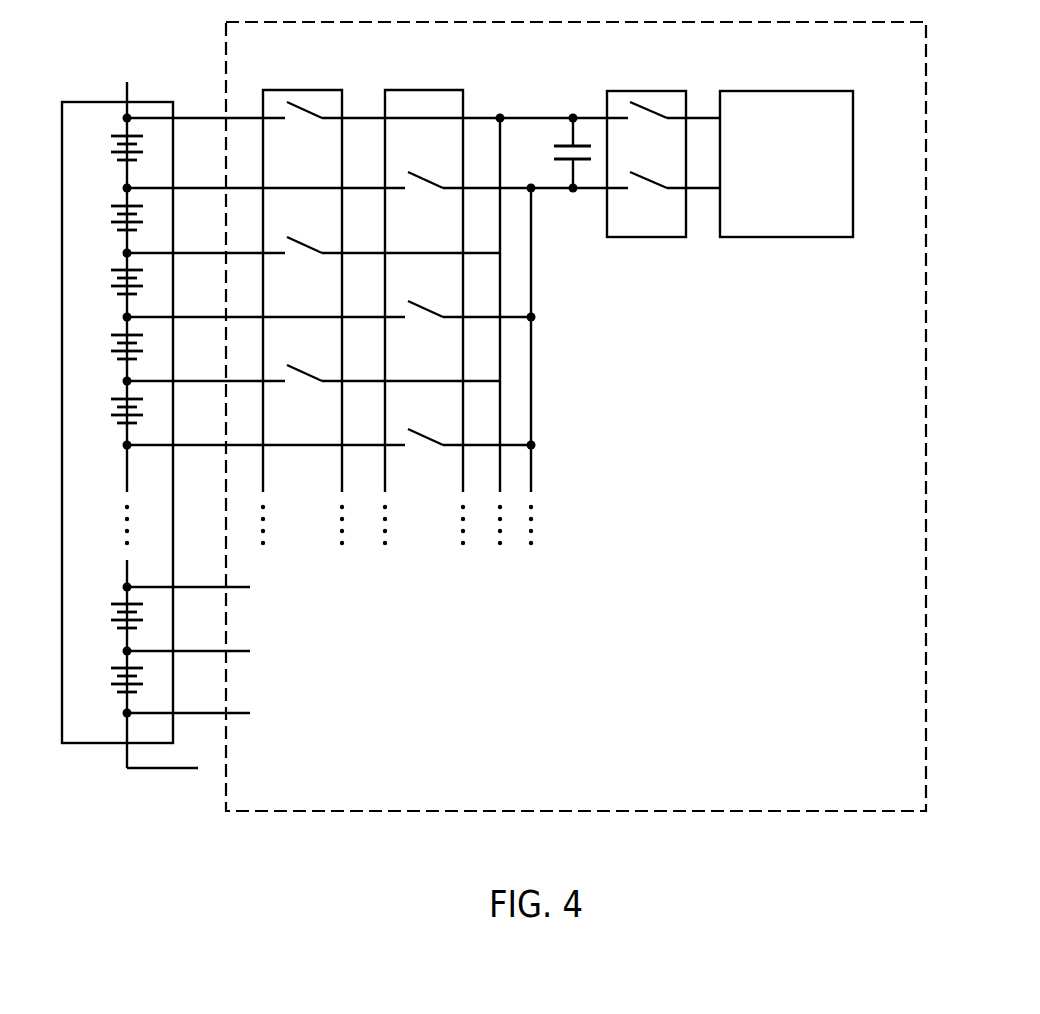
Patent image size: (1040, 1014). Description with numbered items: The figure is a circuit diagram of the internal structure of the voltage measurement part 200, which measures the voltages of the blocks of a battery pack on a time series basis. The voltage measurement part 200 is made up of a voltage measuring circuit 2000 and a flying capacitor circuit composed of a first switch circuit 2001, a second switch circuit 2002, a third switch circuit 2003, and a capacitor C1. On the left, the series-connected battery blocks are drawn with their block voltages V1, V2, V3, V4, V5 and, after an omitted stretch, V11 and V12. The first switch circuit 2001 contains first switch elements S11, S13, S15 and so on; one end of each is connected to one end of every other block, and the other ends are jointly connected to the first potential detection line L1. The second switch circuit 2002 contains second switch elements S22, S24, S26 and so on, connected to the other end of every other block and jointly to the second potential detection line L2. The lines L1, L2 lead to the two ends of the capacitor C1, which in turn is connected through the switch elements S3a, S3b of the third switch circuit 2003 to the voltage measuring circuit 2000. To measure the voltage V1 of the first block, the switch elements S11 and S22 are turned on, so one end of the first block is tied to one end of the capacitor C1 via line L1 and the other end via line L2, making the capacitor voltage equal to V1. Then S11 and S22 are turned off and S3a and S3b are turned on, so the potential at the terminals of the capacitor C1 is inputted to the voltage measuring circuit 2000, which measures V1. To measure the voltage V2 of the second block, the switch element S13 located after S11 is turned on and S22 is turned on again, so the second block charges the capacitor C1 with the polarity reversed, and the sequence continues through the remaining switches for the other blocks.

The voltage measurement part 200 is at (926, 357).
The voltage measuring circuit 2000 is at (853, 120).
The first switch circuit 2001 is at (305, 90).
The second switch circuit 2002 is at (428, 90).
The third switch circuit 2003 is at (662, 238).
The first potential detection line L1 is at (537, 117).
The second potential detection line L2 is at (558, 195).
The capacitor C1 is at (582, 140).
The first switch element S11 is at (304, 127).
The first switch element S13 is at (304, 262).
The first switch element S15 is at (304, 390).
The second switch element S22 is at (425, 197).
The second switch element S24 is at (425, 326).
The second switch element S26 is at (425, 454).
The switch element S3a is at (648, 128).
The switch element S3b is at (648, 197).
The voltage of the first block V1 is at (107, 154).
The voltage of the second block V2 is at (107, 223).
The block voltage V3 is at (107, 287).
The block voltage V4 is at (107, 352).
The block voltage V5 is at (107, 416).
The block voltage V11 is at (107, 621).
The block voltage V12 is at (107, 685).